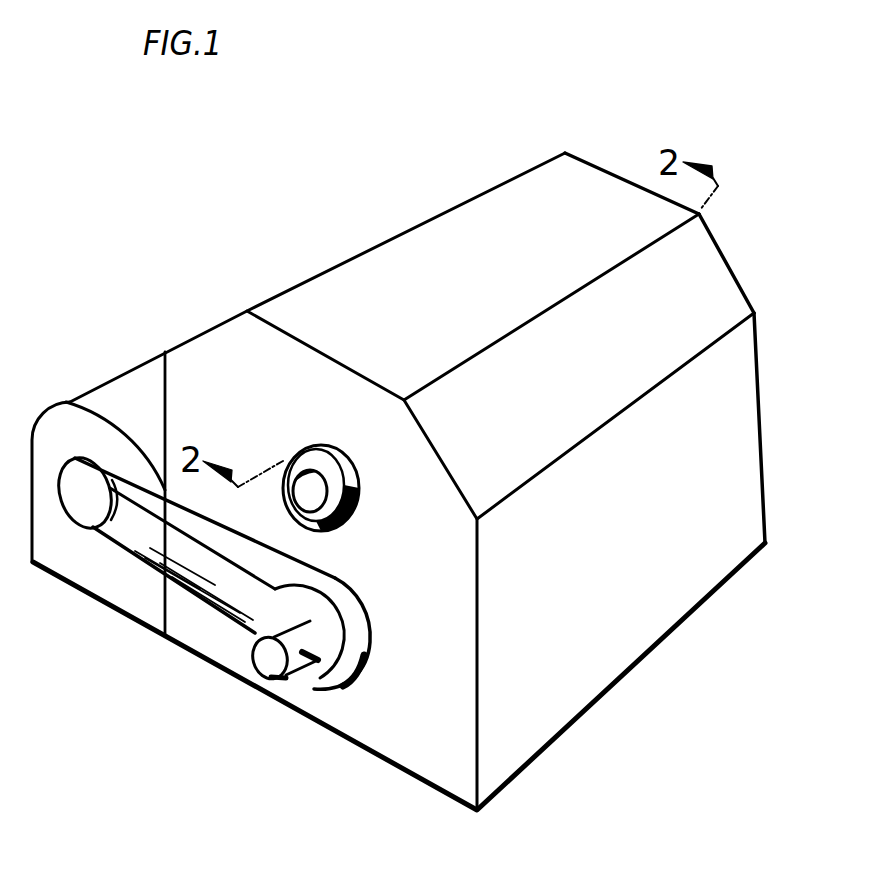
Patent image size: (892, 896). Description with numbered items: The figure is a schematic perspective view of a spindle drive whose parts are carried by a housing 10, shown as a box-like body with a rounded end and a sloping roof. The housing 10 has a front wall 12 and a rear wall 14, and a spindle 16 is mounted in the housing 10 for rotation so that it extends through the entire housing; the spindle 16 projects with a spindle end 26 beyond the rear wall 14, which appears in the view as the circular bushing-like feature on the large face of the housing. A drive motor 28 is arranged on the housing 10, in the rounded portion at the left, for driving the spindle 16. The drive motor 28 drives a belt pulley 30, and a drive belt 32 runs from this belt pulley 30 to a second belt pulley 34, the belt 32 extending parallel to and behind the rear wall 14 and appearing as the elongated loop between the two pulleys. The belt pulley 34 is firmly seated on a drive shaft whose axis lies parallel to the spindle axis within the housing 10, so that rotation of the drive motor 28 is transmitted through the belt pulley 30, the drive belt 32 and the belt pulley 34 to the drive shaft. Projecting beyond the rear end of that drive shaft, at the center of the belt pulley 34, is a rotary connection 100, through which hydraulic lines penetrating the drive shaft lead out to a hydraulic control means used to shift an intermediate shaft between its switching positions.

The housing 10 is at (583, 662).
The front wall 12 is at (739, 236).
The rear wall 14 is at (467, 743).
The spindle 16 is at (287, 450).
The spindle end 26 is at (376, 482).
The drive motor 28 is at (93, 363).
The belt pulley 30 is at (80, 517).
The drive belt 32 is at (155, 597).
The belt pulley 34 is at (320, 680).
The rotary connection 100 is at (275, 672).